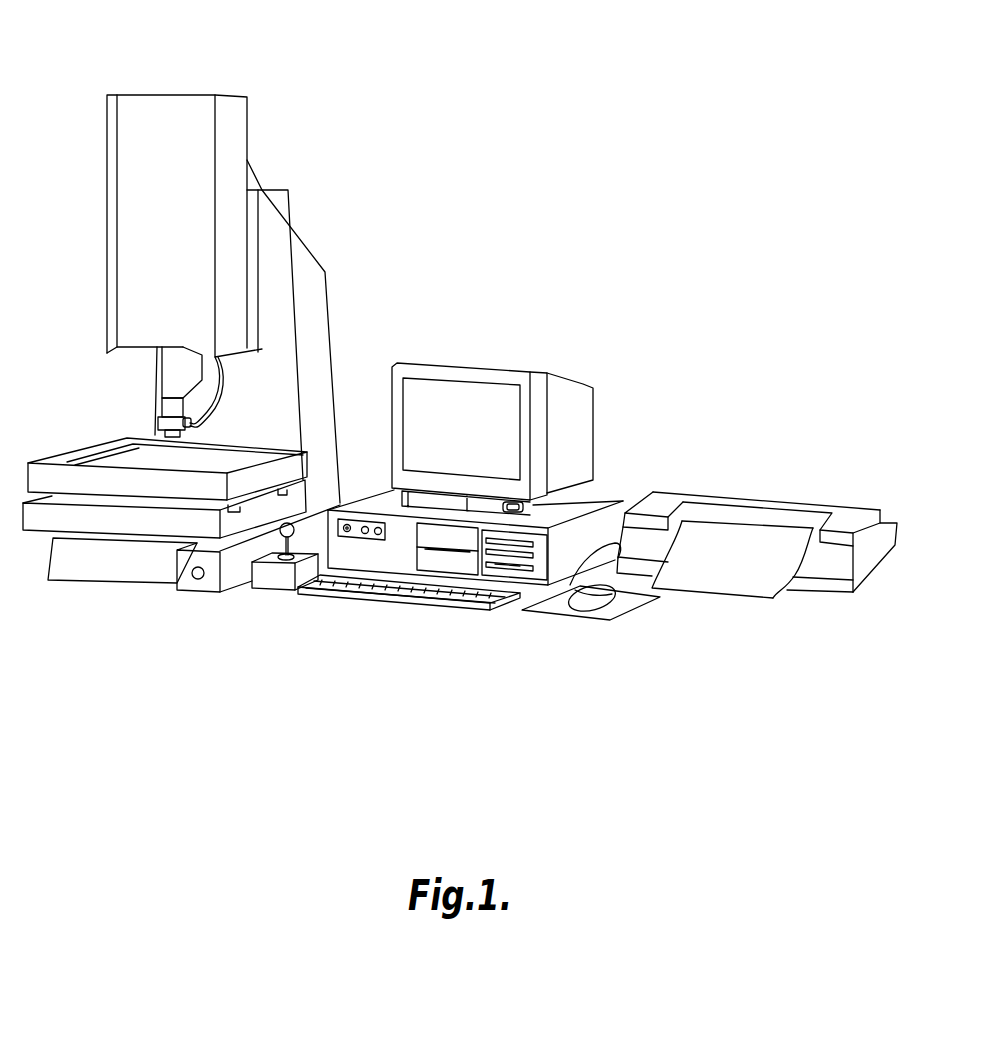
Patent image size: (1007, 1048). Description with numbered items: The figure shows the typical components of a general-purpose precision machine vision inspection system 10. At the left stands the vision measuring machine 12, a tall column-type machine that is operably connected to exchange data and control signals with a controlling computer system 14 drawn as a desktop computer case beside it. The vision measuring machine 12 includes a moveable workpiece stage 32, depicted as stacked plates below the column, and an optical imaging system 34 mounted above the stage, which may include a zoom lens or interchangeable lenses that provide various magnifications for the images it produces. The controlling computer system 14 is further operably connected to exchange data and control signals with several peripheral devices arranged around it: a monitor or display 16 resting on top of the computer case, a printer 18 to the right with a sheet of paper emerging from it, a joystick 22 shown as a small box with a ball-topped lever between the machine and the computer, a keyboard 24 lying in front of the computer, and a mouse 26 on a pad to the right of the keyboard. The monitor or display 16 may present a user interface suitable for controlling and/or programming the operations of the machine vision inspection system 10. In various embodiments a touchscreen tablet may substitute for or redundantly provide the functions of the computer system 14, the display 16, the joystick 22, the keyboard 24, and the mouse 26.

The machine vision inspection system 10 is at (607, 157).
The vision measuring machine 12 is at (163, 93).
The controlling computer system 14 is at (598, 498).
The monitor or display 16 is at (475, 362).
The printer 18 is at (765, 500).
The joystick 22 is at (270, 590).
The keyboard 24 is at (390, 603).
The mouse 26 is at (608, 608).
The moveable workpiece stage 32 is at (80, 447).
The optical imaging system 34 is at (158, 350).